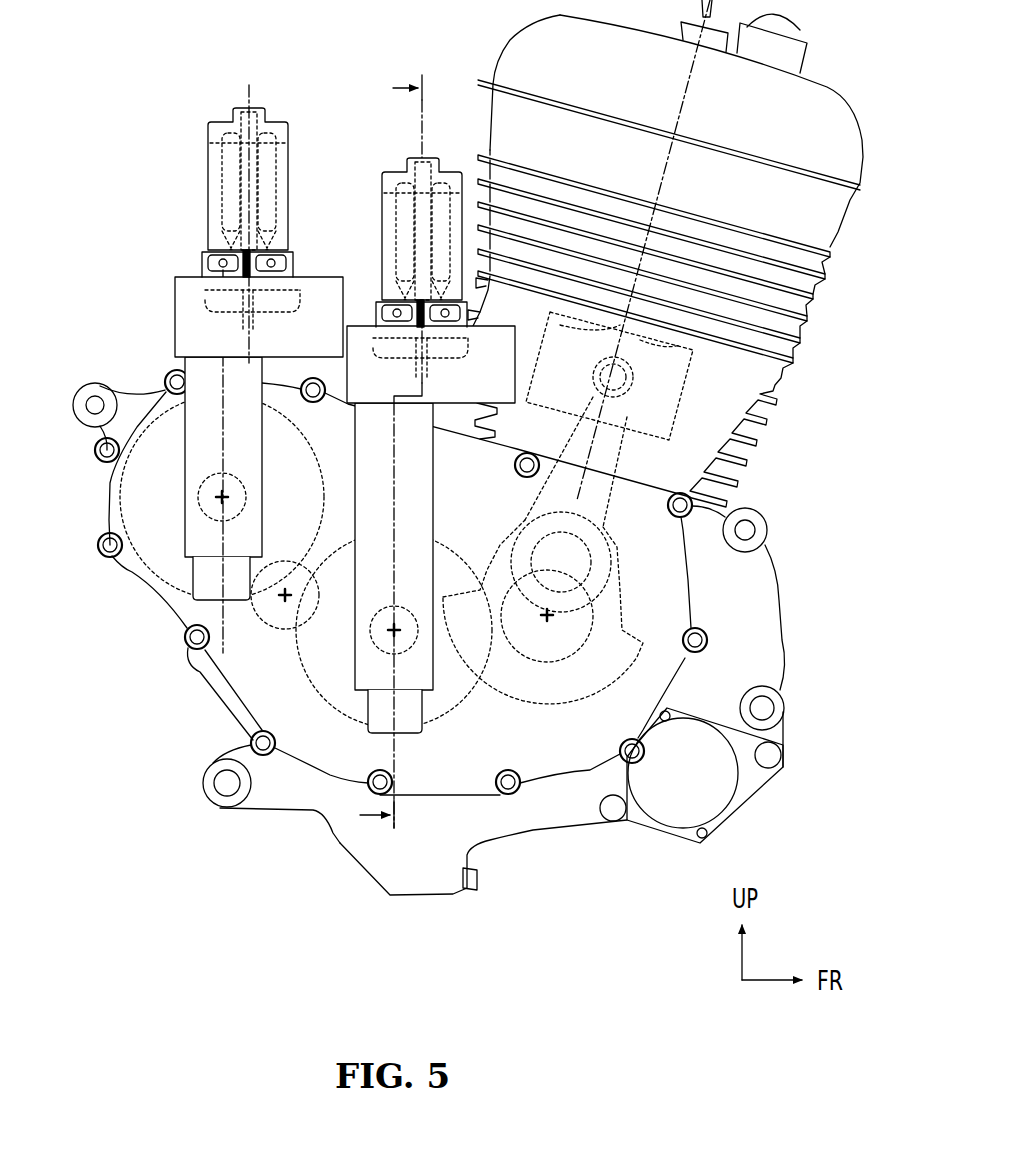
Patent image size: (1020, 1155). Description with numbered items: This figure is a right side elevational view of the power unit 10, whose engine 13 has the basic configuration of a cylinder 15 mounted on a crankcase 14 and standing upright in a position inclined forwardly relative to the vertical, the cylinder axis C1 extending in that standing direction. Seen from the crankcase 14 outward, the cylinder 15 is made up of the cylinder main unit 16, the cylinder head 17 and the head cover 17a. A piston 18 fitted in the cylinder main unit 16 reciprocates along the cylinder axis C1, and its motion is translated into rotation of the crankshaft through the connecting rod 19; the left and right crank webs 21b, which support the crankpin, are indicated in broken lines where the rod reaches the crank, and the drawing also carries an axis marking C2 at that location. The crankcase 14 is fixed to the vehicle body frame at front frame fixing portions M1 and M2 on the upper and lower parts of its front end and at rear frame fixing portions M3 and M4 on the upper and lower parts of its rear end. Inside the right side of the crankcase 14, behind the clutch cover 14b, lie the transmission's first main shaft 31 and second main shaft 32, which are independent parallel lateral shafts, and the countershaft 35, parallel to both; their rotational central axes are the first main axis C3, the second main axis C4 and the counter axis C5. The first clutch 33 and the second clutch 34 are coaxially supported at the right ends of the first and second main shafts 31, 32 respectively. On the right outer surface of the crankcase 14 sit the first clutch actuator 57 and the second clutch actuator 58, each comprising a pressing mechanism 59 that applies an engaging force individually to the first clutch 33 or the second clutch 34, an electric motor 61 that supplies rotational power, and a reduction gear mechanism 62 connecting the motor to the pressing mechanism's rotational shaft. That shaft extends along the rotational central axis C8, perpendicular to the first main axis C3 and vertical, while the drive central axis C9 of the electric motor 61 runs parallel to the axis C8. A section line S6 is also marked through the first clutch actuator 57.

The second clutch actuator 58 is at (205, 122).
The first clutch actuator 57 is at (378, 170).
The electric motor 61 is at (288, 122).
The reduction gear mechanism 62 is at (185, 285).
The pressing mechanism 59 is at (175, 381).
The drive central axis C9 is at (252, 84).
The section line S6 is at (385, 454).
The cylinder axis C1 is at (683, 97).
The head cover 17a is at (830, 90).
The cylinder head 17 is at (815, 297).
The cylinder main unit 16 is at (670, 435).
The cylinder 15 is at (757, 441).
The piston 18 is at (700, 357).
The connecting rod 19 is at (615, 450).
The crankshaft axis C2 is at (549, 617).
The engine 13 is at (466, 602).
The power unit 10 is at (452, 602).
The clutch cover 14b is at (356, 721).
The crankcase 14 is at (245, 702).
The crank webs 21b is at (442, 790).
The first main shaft 31 is at (375, 636).
The second main shaft 32 is at (200, 504).
The first clutch 33 is at (388, 647).
The second clutch 34 is at (163, 568).
The countershaft 35 is at (273, 622).
The first main axis C3 is at (394, 628).
The second main axis C4 is at (220, 496).
The counter axis C5 is at (283, 603).
The rotational central axis C8 is at (225, 461).
The front frame fixing portion M1 is at (760, 518).
The front frame fixing portion M2 is at (785, 706).
The rear frame fixing portion M3 is at (92, 388).
The rear frame fixing portion M4 is at (213, 797).